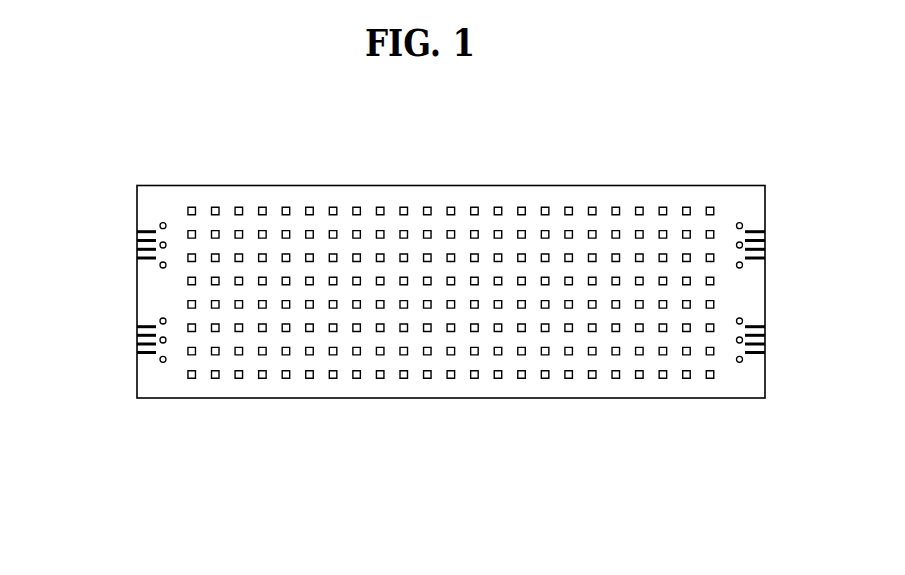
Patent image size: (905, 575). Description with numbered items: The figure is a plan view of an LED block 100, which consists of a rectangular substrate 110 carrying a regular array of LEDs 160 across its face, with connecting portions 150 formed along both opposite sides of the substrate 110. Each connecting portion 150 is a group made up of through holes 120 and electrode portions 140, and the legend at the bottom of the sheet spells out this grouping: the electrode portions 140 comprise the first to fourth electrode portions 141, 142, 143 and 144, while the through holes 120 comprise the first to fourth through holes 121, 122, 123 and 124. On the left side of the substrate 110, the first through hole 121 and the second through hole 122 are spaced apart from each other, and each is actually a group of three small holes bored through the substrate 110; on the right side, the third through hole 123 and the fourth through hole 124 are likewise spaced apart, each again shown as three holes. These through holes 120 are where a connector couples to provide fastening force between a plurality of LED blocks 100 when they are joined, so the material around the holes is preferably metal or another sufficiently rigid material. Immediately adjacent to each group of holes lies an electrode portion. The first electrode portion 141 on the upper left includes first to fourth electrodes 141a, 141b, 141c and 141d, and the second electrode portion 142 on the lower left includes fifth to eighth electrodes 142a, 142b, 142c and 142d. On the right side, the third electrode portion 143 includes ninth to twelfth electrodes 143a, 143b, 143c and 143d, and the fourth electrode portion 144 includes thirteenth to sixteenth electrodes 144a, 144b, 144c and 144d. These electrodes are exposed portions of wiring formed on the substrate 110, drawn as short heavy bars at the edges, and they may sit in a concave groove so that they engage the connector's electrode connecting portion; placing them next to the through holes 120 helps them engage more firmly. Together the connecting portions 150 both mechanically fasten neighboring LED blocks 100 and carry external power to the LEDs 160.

The LED block 100 is at (661, 160).
The substrate 110 is at (533, 186).
The through holes 120 is at (565, 544).
The first through hole 121 is at (163, 222).
The second through hole 122 is at (163, 362).
The third through hole 123 is at (740, 222).
The fourth through hole 124 is at (740, 362).
The electrode portions 140 is at (565, 510).
The first electrode portion 141 is at (60, 198).
The first electrode 141a is at (137, 232).
The second electrode 141b is at (137, 240).
The third electrode 141c is at (137, 249).
The fourth electrode 141d is at (137, 258).
The second electrode portion 142 is at (60, 295).
The fifth electrode 142a is at (137, 327).
The sixth electrode 142b is at (137, 335).
The seventh electrode 142c is at (137, 344).
The eighth electrode 142d is at (137, 352).
The third electrode portion 143 is at (843, 198).
The ninth electrode 143a is at (765, 232).
The tenth electrode 143b is at (765, 240).
The eleventh electrode 143c is at (765, 249).
The twelfth electrode 143d is at (765, 258).
The fourth electrode portion 144 is at (843, 295).
The thirteenth electrode 144a is at (765, 327).
The fourteenth electrode 144b is at (765, 335).
The fifteenth electrode 144c is at (765, 344).
The sixteenth electrode 144d is at (765, 352).
The connecting portions 150 is at (523, 492).
The LEDs 160 is at (239, 207).